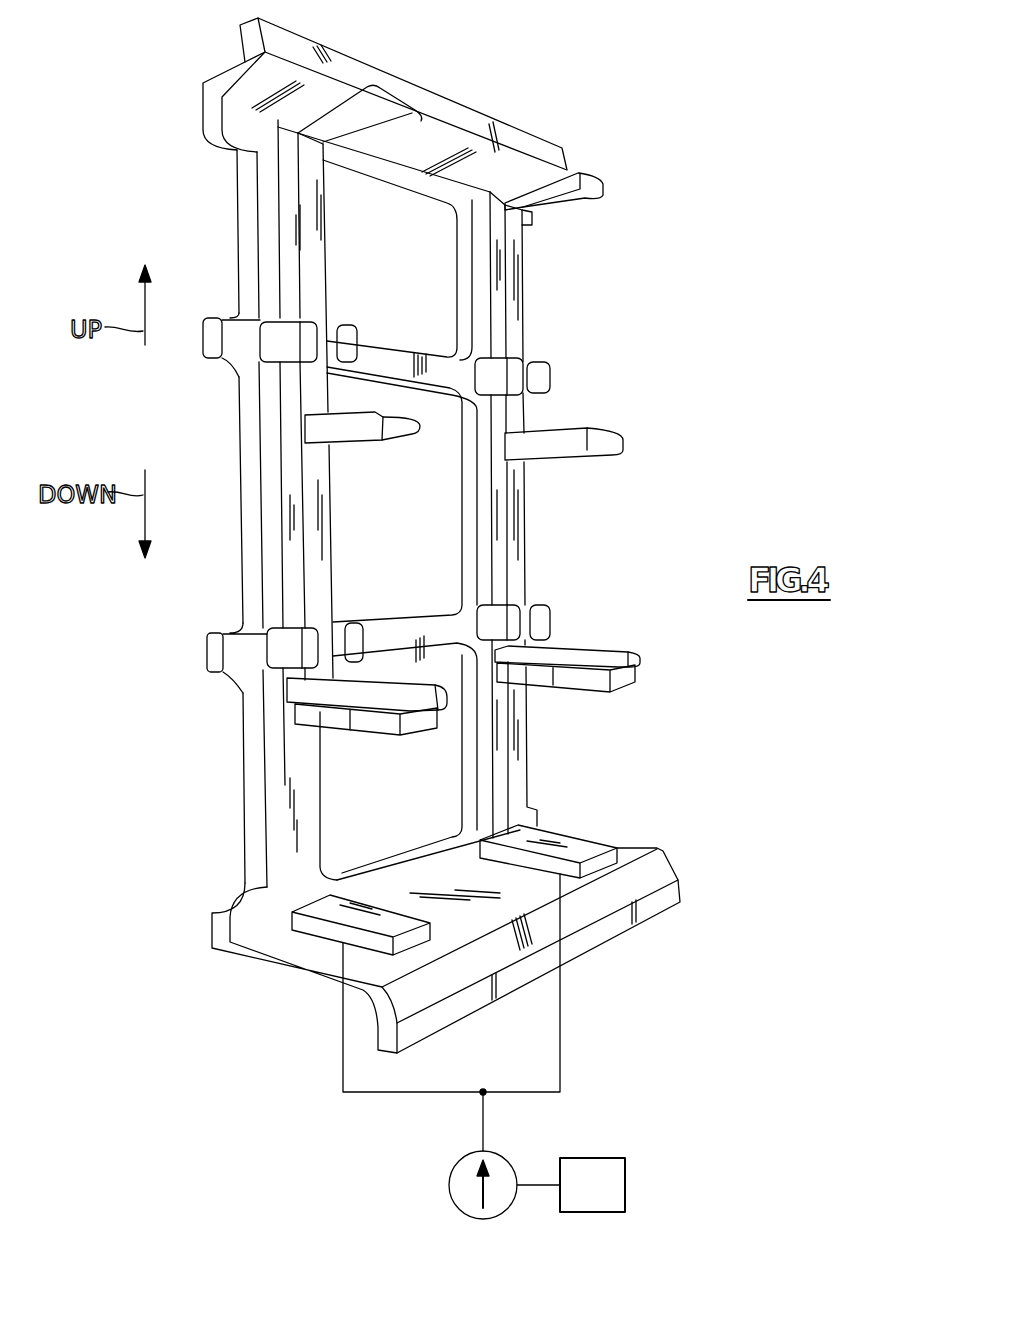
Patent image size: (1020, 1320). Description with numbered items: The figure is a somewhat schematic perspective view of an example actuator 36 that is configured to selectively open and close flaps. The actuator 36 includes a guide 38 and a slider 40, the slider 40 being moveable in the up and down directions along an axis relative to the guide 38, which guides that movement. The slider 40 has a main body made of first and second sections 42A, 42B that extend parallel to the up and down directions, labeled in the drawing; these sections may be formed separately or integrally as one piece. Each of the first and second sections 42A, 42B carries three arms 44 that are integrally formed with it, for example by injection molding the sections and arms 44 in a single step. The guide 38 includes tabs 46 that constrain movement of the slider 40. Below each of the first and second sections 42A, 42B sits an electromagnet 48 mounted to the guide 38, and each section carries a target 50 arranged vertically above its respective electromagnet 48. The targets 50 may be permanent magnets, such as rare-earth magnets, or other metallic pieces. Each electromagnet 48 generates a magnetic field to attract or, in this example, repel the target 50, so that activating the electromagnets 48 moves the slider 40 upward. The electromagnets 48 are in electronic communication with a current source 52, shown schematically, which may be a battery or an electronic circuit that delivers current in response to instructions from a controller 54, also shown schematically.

The actuator 36 is at (745, 94).
The guide 38 is at (472, 115).
The slider 40 is at (535, 322).
The first section 42A is at (325, 512).
The second section 42B is at (520, 523).
The arms 44 is at (387, 100).
The tabs 46 is at (283, 347).
The electromagnet 48 is at (333, 930).
The target 50 is at (347, 722).
The current source 52 is at (457, 1164).
The controller 54 is at (606, 1202).